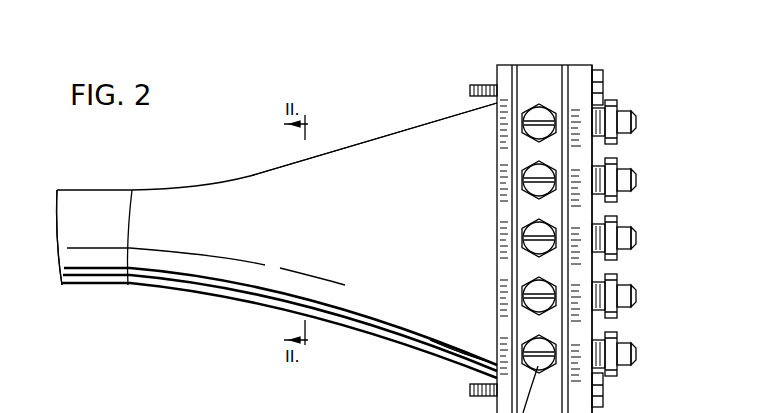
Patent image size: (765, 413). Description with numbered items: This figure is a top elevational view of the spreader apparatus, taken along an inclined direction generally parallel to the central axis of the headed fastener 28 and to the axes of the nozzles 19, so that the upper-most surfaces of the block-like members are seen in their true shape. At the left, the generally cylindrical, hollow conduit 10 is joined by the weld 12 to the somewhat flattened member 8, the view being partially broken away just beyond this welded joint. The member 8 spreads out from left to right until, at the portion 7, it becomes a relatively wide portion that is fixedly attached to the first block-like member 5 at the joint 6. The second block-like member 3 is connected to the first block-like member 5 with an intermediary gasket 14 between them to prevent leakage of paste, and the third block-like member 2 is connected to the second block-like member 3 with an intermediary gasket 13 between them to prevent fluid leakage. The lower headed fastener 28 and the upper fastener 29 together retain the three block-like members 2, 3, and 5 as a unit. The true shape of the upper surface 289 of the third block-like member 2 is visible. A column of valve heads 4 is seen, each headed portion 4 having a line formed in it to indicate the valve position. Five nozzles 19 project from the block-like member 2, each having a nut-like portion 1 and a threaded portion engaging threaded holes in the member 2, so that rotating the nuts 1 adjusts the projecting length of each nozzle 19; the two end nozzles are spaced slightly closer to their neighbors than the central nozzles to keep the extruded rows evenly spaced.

The nut-like portion 1 is at (628, 190).
The third block-like member 2 is at (593, 68).
The second block-like member 3 is at (540, 70).
The valve head 4 is at (535, 139).
The first block-like member 5 is at (497, 67).
The joint 6 is at (497, 262).
The portion of member 7 is at (432, 148).
The flattened member 8 is at (252, 236).
The conduit 10 is at (75, 232).
The weld 12 is at (122, 262).
The gasket 13 is at (571, 70).
The gasket 14 is at (512, 64).
The nozzle 19 is at (630, 246).
The headed fastener 28 is at (468, 91).
The upper fastener 29 is at (592, 327).
The upper surface 289 is at (581, 152).